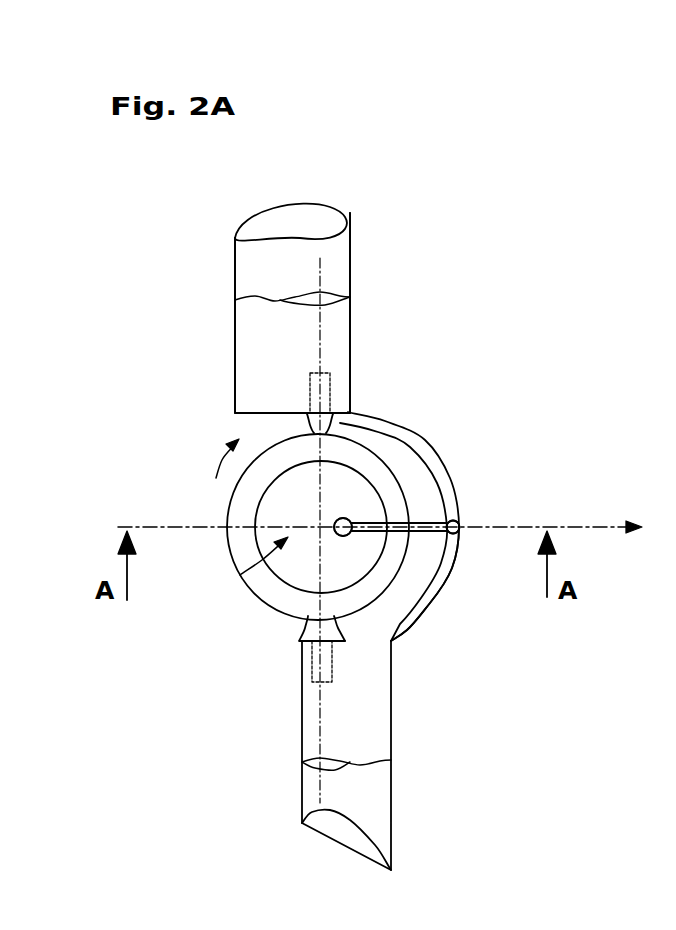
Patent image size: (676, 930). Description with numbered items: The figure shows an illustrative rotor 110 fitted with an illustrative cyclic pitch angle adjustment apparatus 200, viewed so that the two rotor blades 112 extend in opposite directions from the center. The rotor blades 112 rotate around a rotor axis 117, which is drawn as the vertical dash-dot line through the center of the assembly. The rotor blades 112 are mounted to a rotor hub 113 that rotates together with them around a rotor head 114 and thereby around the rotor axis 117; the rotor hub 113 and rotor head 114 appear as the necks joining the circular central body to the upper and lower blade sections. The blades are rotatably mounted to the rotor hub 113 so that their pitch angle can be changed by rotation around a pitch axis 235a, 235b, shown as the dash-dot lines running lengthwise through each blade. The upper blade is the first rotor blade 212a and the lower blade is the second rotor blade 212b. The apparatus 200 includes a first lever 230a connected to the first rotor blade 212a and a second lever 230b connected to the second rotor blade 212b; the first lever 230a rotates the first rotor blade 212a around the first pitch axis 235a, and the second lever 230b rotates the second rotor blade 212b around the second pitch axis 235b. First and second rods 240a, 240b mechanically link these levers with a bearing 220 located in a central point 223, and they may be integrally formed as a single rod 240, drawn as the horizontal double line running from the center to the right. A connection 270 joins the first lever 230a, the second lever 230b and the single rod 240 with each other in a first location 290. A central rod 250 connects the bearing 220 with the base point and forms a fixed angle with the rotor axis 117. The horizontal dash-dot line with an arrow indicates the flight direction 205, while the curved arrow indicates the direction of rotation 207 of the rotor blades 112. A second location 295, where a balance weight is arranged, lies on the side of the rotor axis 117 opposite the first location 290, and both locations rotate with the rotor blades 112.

The rotor 110 is at (196, 276).
The rotor blades 112 is at (337, 347).
The rotor hub 113 is at (262, 438).
The rotor head 114 is at (310, 616).
The rotor axis 117 is at (305, 515).
The cyclic pitch angle adjustment apparatus 200 is at (414, 410).
The flight direction 205 is at (600, 526).
The direction of rotation 207 is at (213, 460).
The first rotor blade 212a is at (262, 322).
The second rotor blade 212b is at (365, 745).
The bearing 220 is at (343, 535).
The central point 223 is at (326, 540).
The first lever 230a is at (410, 432).
The second lever 230b is at (450, 597).
The first pitch axis 235a is at (343, 323).
The second pitch axis 235b is at (323, 793).
The single rod 240 is at (421, 534).
The first rod 240a is at (410, 518).
The second rod 240b is at (424, 534).
The central rod 250 is at (351, 506).
The connection 270 is at (457, 519).
The first location 290 is at (463, 523).
The second location 295 is at (240, 575).